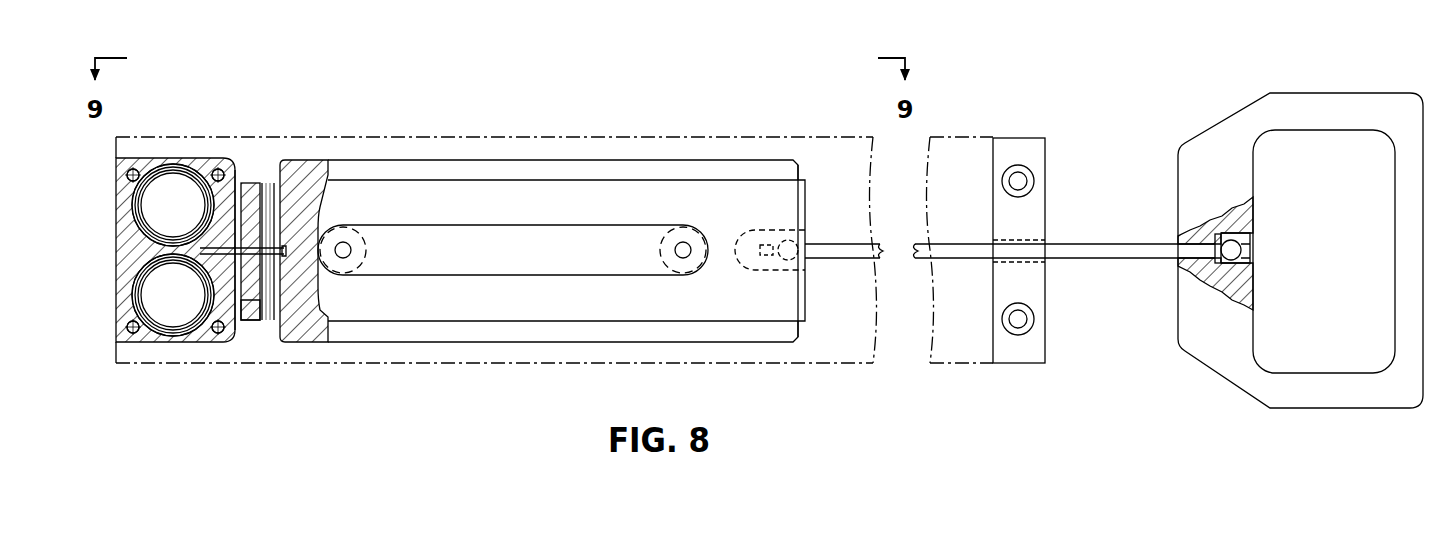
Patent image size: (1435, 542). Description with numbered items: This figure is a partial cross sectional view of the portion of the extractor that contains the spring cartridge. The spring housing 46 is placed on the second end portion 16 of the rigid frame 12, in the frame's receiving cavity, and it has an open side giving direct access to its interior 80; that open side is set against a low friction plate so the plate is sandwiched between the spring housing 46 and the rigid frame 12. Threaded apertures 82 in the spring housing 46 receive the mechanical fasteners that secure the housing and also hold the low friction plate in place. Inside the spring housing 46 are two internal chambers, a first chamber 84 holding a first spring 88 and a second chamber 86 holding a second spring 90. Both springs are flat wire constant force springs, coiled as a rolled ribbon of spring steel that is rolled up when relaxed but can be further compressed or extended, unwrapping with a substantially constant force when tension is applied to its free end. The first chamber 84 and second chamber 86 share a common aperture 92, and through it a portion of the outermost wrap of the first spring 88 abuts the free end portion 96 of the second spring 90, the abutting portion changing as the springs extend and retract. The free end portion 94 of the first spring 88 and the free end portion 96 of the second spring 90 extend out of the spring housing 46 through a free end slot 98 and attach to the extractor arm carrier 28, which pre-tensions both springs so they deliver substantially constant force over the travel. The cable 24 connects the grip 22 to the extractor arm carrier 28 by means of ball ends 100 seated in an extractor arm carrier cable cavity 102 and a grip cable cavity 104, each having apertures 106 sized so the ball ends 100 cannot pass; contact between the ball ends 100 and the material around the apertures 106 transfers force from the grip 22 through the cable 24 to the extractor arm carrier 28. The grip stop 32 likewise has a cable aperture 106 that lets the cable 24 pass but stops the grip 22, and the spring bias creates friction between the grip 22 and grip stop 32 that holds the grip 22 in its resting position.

The rigid frame 12 is at (618, 88).
The second end portion 16 is at (258, 95).
The grip 22 is at (1300, 290).
The cable 24 is at (1077, 262).
The extractor arm carrier 28 is at (754, 346).
The grip stop 32 is at (1036, 153).
The spring housing 46 is at (112, 290).
The interior 80 is at (118, 210).
The threaded apertures 82 is at (135, 170).
The first chamber 84 is at (173, 198).
The second chamber 86 is at (173, 303).
The first spring 88 is at (244, 182).
The second spring 90 is at (253, 313).
The common aperture 92 is at (305, 330).
The free end portion of the first spring 94 is at (288, 227).
The free end portion of the second spring 96 is at (286, 262).
The free end slot 98 is at (268, 205).
The ball ends 100 is at (786, 240).
The extractor arm carrier cable cavity 102 is at (740, 235).
The grip cable cavity 104 is at (1238, 240).
The apertures 106 is at (806, 260).